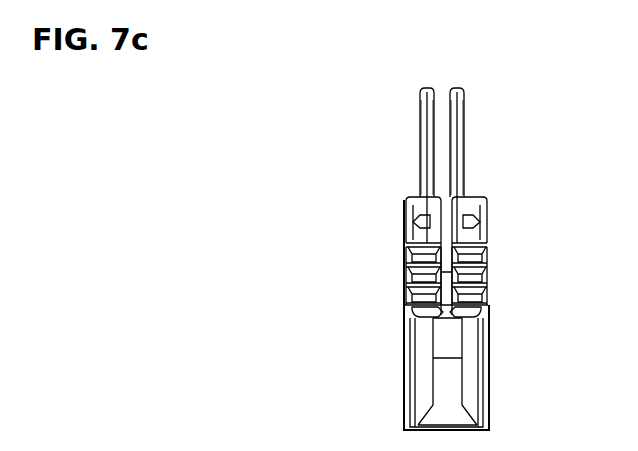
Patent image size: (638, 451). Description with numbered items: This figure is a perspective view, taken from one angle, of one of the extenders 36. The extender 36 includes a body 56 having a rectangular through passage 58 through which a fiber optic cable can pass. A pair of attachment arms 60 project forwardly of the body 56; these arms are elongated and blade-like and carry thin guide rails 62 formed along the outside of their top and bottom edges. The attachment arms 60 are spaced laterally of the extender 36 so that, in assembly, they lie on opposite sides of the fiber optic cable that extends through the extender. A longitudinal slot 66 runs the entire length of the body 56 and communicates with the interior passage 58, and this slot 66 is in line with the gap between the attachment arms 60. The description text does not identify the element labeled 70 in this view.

The extender 36 is at (500, 224).
The body 56 is at (423, 208).
The rectangular through passage 58 is at (450, 343).
The attachment arms 60 is at (447, 113).
The guide rails 62 is at (430, 119).
The longitudinal slot 66 is at (448, 276).
The second contact block 70 is at (468, 195).